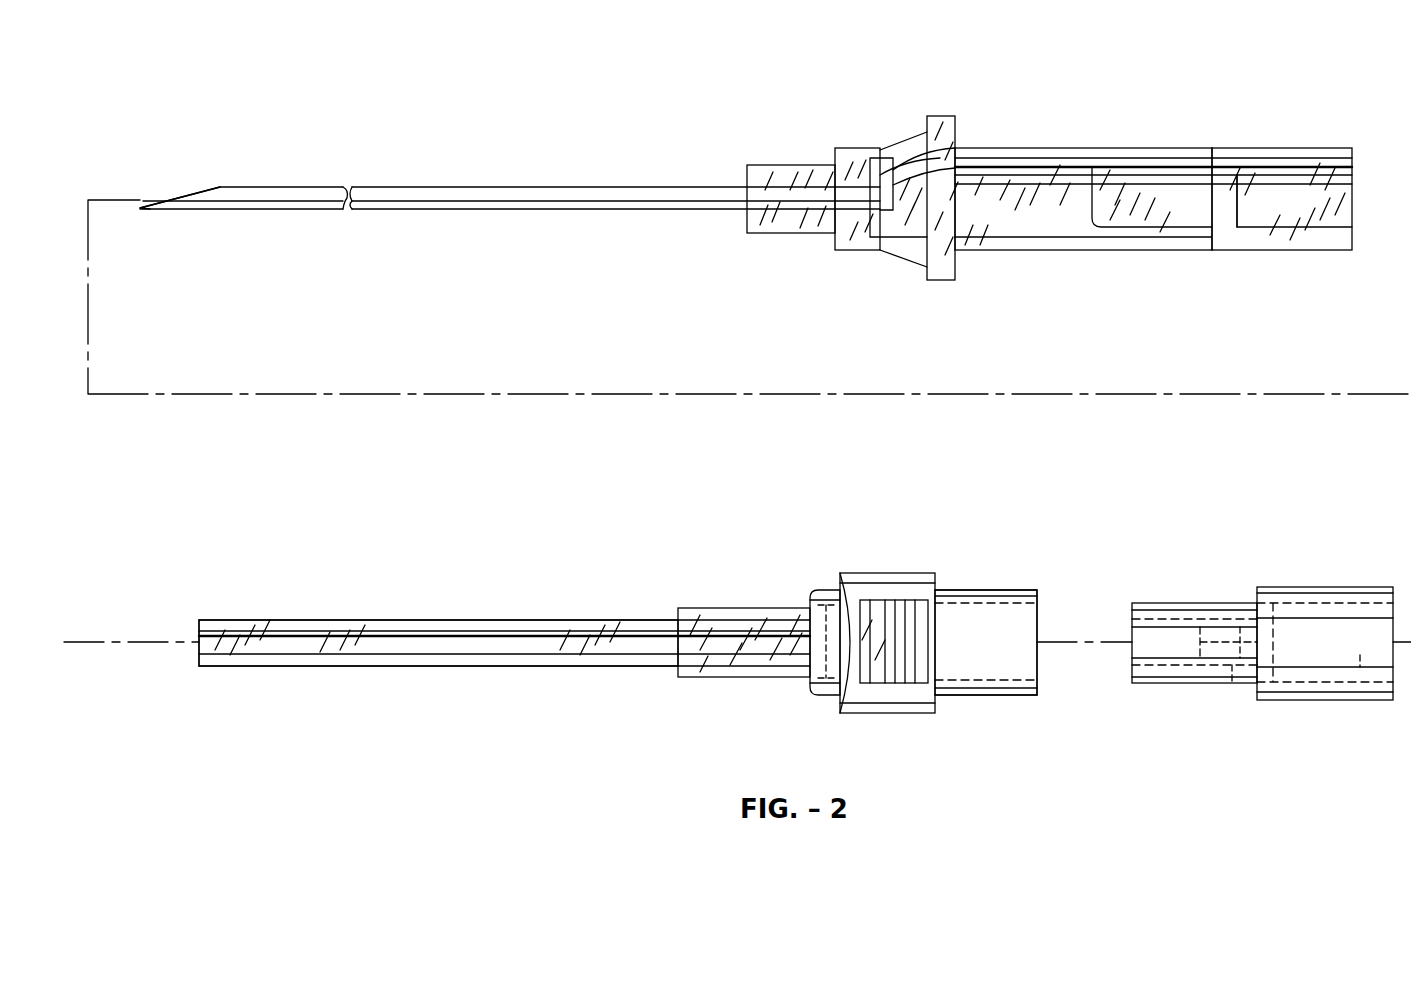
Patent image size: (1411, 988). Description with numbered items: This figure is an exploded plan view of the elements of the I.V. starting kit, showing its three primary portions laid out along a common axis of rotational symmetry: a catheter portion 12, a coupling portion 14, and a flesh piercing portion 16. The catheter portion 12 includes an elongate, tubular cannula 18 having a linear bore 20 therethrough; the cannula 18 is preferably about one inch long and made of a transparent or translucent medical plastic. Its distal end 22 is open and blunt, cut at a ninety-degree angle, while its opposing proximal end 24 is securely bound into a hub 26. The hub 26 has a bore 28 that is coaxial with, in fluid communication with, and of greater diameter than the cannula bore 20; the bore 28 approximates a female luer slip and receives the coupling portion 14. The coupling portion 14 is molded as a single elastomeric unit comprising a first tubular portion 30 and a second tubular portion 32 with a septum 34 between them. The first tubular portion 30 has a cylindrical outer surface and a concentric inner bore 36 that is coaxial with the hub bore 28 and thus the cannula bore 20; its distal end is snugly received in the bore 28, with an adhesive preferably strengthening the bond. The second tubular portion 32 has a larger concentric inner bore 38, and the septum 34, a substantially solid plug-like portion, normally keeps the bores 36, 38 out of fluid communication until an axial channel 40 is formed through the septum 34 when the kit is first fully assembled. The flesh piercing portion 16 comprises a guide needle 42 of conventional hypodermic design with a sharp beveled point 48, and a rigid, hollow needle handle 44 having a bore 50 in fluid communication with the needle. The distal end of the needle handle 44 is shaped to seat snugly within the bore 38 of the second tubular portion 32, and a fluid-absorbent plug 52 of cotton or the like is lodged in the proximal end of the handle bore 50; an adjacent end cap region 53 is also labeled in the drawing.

The catheter portion 12 is at (717, 551).
The coupling portion 14 is at (1203, 744).
The flesh piercing portion 16 is at (888, 106).
The cannula 18 is at (362, 668).
The bore 20 is at (480, 623).
The distal end 22 is at (199, 635).
The proximal end 24 is at (885, 590).
The hub 26 is at (762, 680).
The bore 28 is at (955, 640).
The first tubular portion 30 is at (1168, 603).
The second tubular portion 32 is at (1360, 587).
The septum 34 is at (1243, 675).
The inner bore 36 is at (1157, 640).
The inner bore 38 is at (1360, 655).
The axial channel 40 is at (1235, 635).
The guide needle 42 is at (435, 187).
The needle handle 44 is at (770, 165).
The beveled point 48 is at (157, 213).
The bore 50 is at (1052, 190).
The fluid-absorbent plug 52 is at (1250, 218).
The hub end cap 53 is at (1288, 155).